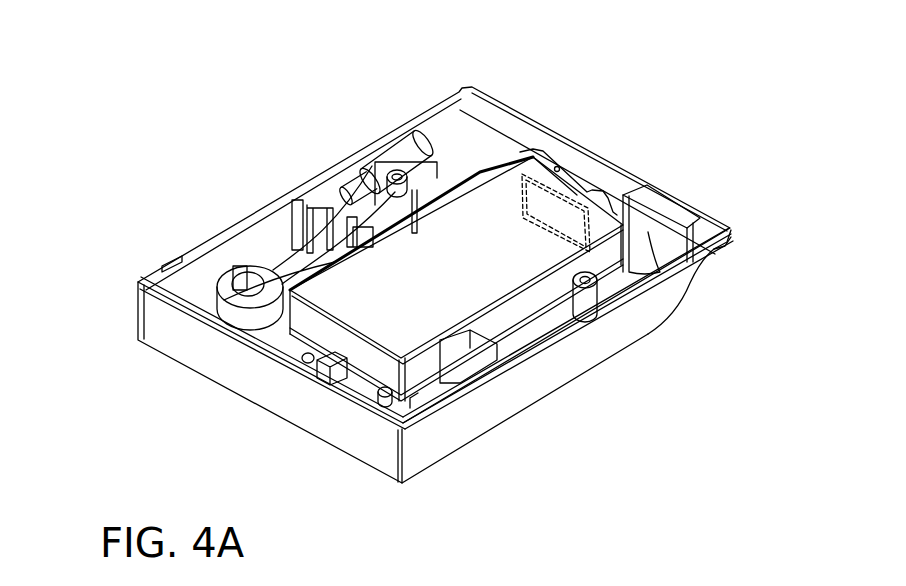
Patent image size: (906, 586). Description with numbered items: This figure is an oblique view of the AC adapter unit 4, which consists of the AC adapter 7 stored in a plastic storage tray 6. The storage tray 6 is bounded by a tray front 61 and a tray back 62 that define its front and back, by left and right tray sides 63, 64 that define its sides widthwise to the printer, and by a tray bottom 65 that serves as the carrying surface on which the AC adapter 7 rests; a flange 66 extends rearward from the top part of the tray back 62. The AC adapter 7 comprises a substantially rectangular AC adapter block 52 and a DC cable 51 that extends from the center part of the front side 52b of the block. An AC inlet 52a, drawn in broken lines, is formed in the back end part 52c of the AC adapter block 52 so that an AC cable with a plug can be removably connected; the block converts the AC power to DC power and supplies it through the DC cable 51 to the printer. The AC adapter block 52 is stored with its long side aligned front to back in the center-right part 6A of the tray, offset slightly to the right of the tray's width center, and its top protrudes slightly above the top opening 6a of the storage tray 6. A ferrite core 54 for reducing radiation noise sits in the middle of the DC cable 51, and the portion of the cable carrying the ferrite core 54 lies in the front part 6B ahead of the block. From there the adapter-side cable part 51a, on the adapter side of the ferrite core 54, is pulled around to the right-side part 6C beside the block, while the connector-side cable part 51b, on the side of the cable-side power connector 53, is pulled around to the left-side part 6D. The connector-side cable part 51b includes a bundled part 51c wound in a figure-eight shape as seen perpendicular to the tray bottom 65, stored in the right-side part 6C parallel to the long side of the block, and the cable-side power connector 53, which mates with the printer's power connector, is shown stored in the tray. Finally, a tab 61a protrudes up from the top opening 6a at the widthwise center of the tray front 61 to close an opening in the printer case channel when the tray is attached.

The AC adapter unit 4 is at (530, 81).
The storage tray 6 is at (223, 221).
The center-right part 6A is at (495, 222).
The front part 6B is at (370, 397).
The right-side part 6C is at (545, 333).
The left-side part 6D is at (329, 231).
The top opening 6a is at (396, 345).
The AC adapter 7 is at (481, 198).
The DC cable 51 is at (240, 303).
The adapter-side cable part 51a is at (423, 408).
The connector-side cable part 51b is at (222, 283).
The bundled part 51c is at (257, 262).
The AC adapter block 52 is at (581, 312).
The AC inlet 52a is at (568, 220).
The front side 52b is at (343, 383).
The back end part 52c is at (633, 213).
The cable-side power connector 53 is at (391, 150).
The ferrite core 54 is at (318, 352).
The tray front 61 is at (148, 322).
The tab 61a is at (245, 345).
The tray back 62 is at (688, 283).
The left tray side 63 is at (292, 187).
The right tray side 64 is at (540, 393).
The tray bottom 65 is at (470, 447).
The flange 66 is at (707, 255).